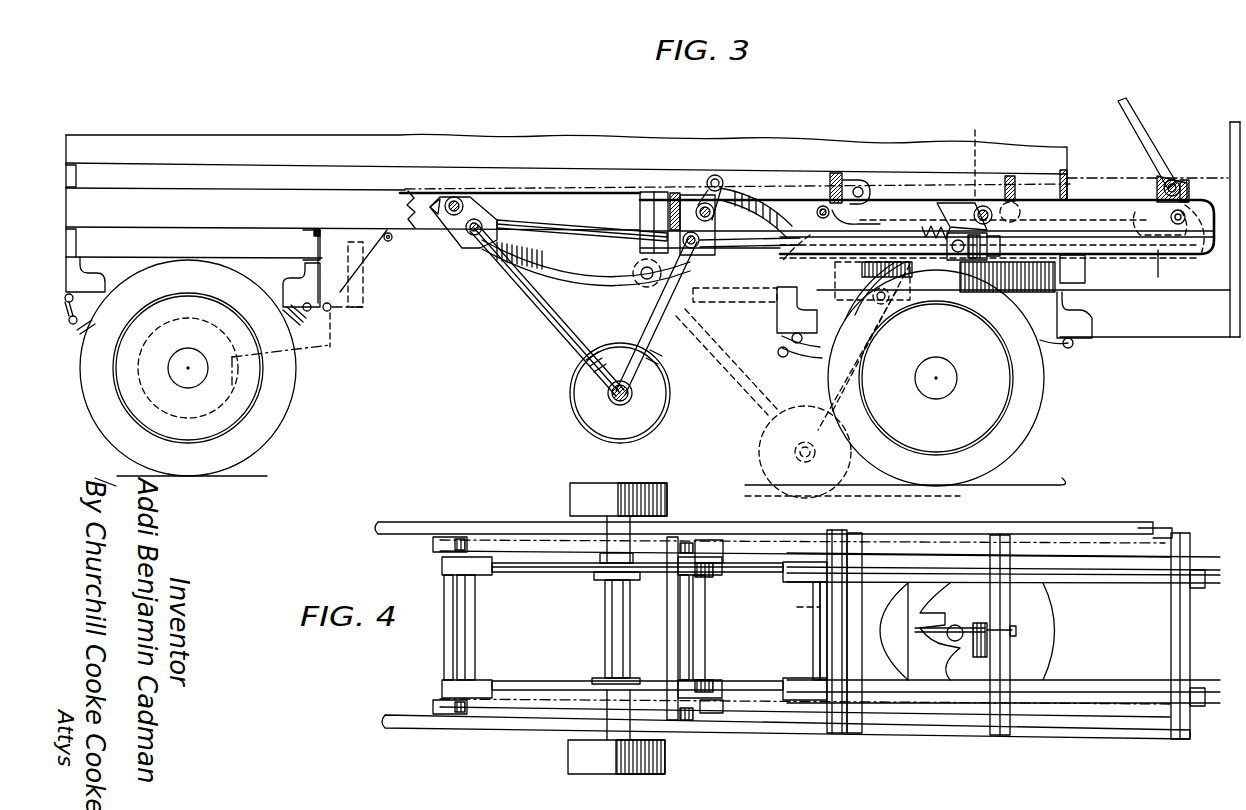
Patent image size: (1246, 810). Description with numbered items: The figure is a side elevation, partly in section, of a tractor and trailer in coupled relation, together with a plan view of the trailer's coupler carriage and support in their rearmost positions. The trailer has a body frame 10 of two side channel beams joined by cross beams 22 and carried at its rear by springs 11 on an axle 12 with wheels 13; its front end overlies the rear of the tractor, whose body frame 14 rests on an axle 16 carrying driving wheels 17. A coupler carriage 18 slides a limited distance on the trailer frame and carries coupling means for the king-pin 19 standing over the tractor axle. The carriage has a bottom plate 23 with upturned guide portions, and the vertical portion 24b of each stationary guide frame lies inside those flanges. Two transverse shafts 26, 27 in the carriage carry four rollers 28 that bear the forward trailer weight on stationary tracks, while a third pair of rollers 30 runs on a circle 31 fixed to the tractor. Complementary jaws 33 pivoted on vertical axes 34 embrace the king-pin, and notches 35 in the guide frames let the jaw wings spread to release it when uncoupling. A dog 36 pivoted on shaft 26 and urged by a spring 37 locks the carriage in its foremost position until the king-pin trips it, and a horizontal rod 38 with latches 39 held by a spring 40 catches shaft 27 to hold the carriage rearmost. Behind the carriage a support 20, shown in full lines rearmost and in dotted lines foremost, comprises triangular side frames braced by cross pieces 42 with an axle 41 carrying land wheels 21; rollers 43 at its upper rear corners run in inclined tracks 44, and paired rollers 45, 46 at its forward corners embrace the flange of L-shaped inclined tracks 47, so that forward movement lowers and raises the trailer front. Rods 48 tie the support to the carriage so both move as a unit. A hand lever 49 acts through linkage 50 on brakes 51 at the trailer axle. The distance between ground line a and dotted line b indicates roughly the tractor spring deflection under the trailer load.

In FIG. 3, the body frame 10 is at (265, 205).
In FIG. 3, the springs 11 is at (293, 327).
In FIG. 3, the axle 12 is at (180, 372).
In FIG. 3, the wheels 13 is at (265, 415).
In FIG. 3, the body frame 14 is at (1160, 335).
In FIG. 3, the axle 16 is at (945, 388).
In FIG. 3, the driving or traction wheels 17 is at (1030, 408).
In FIG. 3, the coupler carriage 18 is at (890, 200).
In FIG. 4, the coupler carriage 18 is at (935, 565).
In FIG. 3, the king-pin 19 is at (1010, 292).
In FIG. 3, the support 20 is at (555, 235).
In FIG. 4, the support 20 is at (518, 572).
In FIG. 3, the land wheels 21 is at (572, 393).
In FIG. 4, the land wheels 21 is at (570, 500).
In FIG. 3, the cross beams 22 is at (76, 245).
In FIG. 4, the cross beams 22 is at (667, 608).
In FIG. 3, the bottom plate or casting 23 is at (930, 258).
In FIG. 4, the bottom plate or casting 23 is at (908, 595).
In FIG. 3, the vertical portion 24b is at (998, 243).
In FIG. 3, the shaft 26 is at (988, 205).
In FIG. 3, the shaft 27 is at (823, 205).
In FIG. 4, the shaft 27 is at (815, 645).
In FIG. 3, the rollers 28 is at (768, 272).
In FIG. 3, the rollers 30 is at (1135, 255).
In FIG. 3, the circle 31 is at (1072, 271).
In FIG. 4, the circle 31 is at (1048, 618).
In FIG. 3, the jaws 33 is at (979, 246).
In FIG. 4, the jaws 33 is at (970, 617).
In FIG. 4, the vertical axes 34 is at (925, 625).
In FIG. 3, the notches 35 is at (1170, 270).
In FIG. 3, the dog 36 is at (975, 205).
In FIG. 3, the spring 37 is at (935, 230).
In FIG. 4, the horizontal rod 38 is at (860, 575).
In FIG. 3, the latches 39 is at (857, 216).
In FIG. 4, the latches 39 is at (800, 631).
In FIG. 3, the spring 40 is at (850, 186).
In FIG. 3, the axle 41 is at (633, 395).
In FIG. 4, the axle 41 is at (604, 645).
In FIG. 3, the cross pieces 42 is at (474, 236).
In FIG. 4, the cross pieces 42 is at (445, 630).
In FIG. 3, the rollers 43 is at (452, 196).
In FIG. 4, the rollers 43 is at (432, 545).
In FIG. 3, the inclined tracks 44 is at (546, 268).
In FIG. 4, the inclined tracks 44 is at (420, 524).
In FIG. 3, the rollers 45 is at (705, 200).
In FIG. 4, the rollers 45 is at (685, 540).
In FIG. 3, the rollers 46 is at (722, 180).
In FIG. 4, the rollers 46 is at (712, 540).
In FIG. 3, the inclined tracks 47 is at (756, 212).
In FIG. 3, the rods 48 is at (742, 250).
In FIG. 4, the rods 48 is at (738, 572).
In FIG. 3, the hand lever 49 is at (1142, 118).
In FIG. 3, the linkage 50 is at (325, 345).
In FIG. 3, the brakes 51 is at (218, 410).
In FIG. 3, the line representing the surface of the ground a is at (906, 473).
In FIG. 3, the dotted line b is at (852, 495).